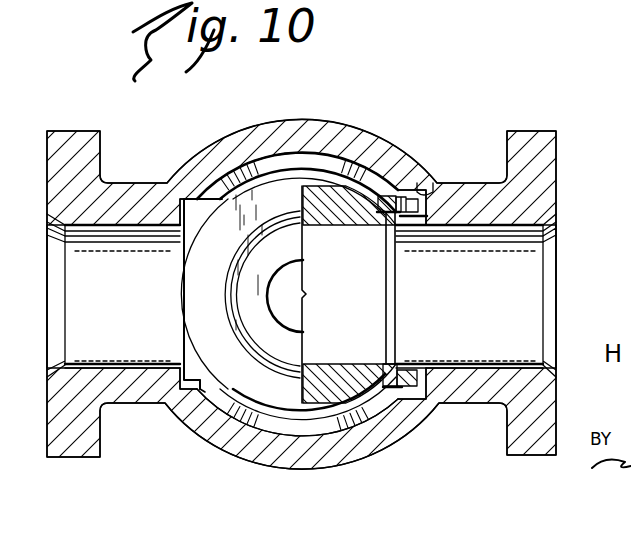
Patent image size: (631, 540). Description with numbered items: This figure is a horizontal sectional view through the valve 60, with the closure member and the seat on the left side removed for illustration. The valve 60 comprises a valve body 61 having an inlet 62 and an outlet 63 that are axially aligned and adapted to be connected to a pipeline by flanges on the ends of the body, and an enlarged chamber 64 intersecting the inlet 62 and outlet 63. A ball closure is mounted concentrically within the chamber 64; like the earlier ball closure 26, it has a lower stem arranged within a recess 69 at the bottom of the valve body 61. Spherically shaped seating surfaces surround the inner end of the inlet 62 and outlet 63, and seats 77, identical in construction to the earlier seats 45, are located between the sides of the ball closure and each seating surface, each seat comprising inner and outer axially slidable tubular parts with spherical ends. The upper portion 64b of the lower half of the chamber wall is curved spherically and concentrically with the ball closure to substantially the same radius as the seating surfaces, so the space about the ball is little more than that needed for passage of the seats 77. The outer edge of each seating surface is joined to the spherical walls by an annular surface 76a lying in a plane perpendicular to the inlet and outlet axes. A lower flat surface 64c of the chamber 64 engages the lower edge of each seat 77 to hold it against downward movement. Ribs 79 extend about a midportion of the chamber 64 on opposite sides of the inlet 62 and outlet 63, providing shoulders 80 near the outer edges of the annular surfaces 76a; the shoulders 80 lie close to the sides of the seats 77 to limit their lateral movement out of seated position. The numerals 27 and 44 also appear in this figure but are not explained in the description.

The valve 60 is at (379, 126).
The valve body 61 is at (283, 120).
The inlet 62 is at (83, 366).
The outlet 63 is at (497, 363).
The chamber 64 is at (300, 437).
The upper portion of the lower half of the chamber wall 64b is at (290, 167).
The lower flat surface 64c is at (210, 319).
The ball closure 26 is at (336, 188).
The flow passage 27 is at (350, 362).
The retainer ring 44 is at (184, 272).
The seats 45 is at (392, 196).
The recess 69 is at (292, 272).
The annular surface 76a is at (427, 195).
The seats 77 is at (393, 389).
The ribs 79 is at (259, 152).
The shoulders 80 is at (400, 208).